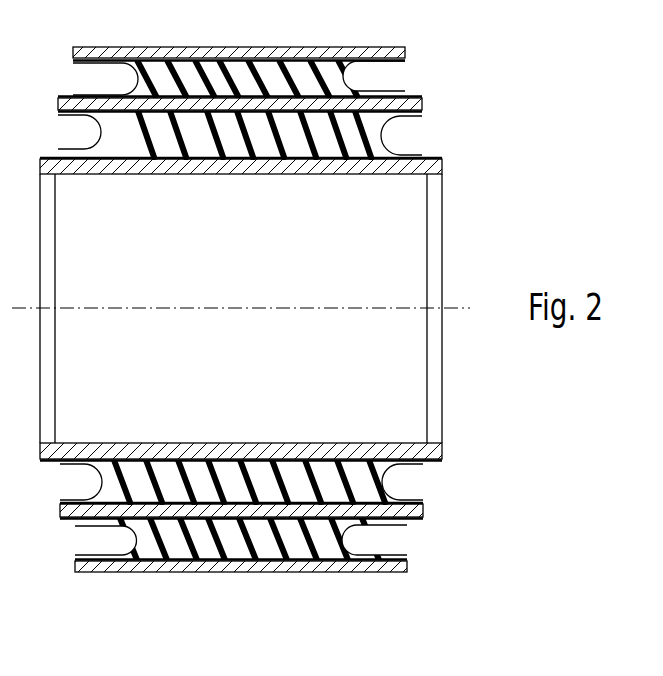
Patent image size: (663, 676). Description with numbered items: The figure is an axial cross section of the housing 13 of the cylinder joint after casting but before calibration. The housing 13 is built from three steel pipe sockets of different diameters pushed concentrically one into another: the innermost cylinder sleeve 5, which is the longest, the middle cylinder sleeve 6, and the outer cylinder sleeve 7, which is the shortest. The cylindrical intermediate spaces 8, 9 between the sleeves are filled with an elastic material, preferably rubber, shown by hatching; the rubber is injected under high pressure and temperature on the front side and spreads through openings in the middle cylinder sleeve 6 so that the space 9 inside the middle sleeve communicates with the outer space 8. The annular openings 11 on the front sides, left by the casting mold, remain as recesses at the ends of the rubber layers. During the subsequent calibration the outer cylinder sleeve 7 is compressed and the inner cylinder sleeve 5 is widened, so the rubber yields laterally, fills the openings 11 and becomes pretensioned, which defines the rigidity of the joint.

The innermost cylinder sleeve 5 is at (272, 325).
The middle cylinder sleeve 6 is at (423, 103).
The outer cylinder sleeve 7 is at (268, 286).
The outer cylindrical intermediate space 8 is at (279, 55).
The inner cylindrical intermediate space 9 is at (314, 55).
The annular openings 11 is at (95, 82).
The housing 13 is at (442, 462).